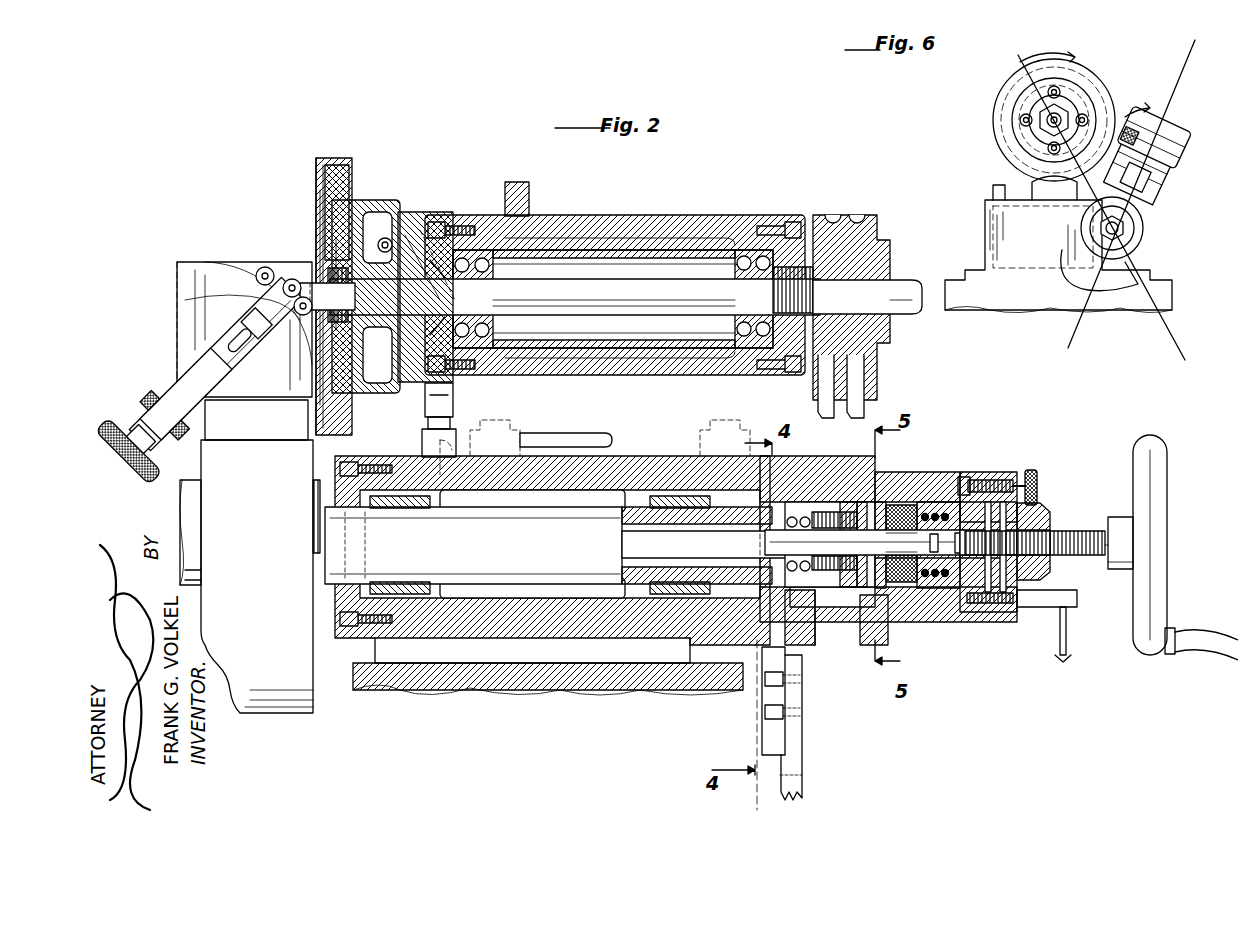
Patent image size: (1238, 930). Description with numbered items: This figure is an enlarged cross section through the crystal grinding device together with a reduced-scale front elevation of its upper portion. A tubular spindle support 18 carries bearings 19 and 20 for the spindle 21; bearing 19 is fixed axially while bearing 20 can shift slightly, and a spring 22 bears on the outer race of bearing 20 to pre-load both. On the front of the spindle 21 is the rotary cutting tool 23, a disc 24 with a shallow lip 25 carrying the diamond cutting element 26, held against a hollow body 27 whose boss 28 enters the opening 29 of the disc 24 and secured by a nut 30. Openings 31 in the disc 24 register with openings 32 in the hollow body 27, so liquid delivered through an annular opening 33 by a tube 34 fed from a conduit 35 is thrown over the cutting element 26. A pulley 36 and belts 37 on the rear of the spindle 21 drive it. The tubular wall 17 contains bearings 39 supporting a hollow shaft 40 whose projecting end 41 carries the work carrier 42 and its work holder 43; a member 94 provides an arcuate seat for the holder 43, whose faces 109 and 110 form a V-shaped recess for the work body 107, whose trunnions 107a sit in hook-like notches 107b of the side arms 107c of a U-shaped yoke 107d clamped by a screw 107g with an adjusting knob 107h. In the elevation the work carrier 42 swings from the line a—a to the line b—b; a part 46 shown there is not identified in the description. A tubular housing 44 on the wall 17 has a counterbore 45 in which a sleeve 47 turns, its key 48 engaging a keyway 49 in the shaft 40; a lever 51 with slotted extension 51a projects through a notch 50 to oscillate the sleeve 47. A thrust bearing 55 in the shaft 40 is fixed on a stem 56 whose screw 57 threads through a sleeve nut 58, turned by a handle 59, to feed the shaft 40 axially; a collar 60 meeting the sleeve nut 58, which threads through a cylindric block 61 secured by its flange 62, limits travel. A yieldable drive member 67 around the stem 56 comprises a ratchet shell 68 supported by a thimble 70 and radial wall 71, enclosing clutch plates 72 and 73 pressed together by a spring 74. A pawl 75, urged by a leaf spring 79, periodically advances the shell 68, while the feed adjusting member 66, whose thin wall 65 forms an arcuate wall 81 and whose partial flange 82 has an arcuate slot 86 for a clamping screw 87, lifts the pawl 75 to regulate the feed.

In FIG. 2, the tubular wall 17 is at (628, 455).
In FIG. 6, the tubular wall 17 is at (990, 222).
In FIG. 2, the tubular spindle support 18 is at (668, 188).
In FIG. 2, the bearing 19 is at (470, 240).
In FIG. 2, the bearing 20 is at (760, 250).
In FIG. 2, the spindle 21 is at (593, 306).
In FIG. 6, the spindle 21 is at (1030, 110).
In FIG. 2, the spring 22 is at (740, 280).
In FIG. 2, the rotary cutting tool 23 is at (345, 175).
In FIG. 6, the rotary cutting tool 23 is at (1100, 70).
In FIG. 2, the disc 24 is at (360, 180).
In FIG. 2, the lip 25 is at (322, 170).
In FIG. 2, the cutting element 26 is at (320, 180).
In FIG. 2, the hollow body 27 is at (375, 205).
In FIG. 2, the concentric boss 28 is at (378, 245).
In FIG. 2, the opening 29 is at (340, 250).
In FIG. 2, the nut 30 is at (325, 275).
In FIG. 6, the nut 30 is at (1068, 115).
In FIG. 2, the openings 31 is at (352, 215).
In FIG. 6, the openings 31 is at (1046, 150).
In FIG. 2, the openings 32 is at (398, 250).
In FIG. 2, the annular opening 33 is at (405, 395).
In FIG. 2, the tube 34 is at (432, 270).
In FIG. 2, the conduit 35 is at (577, 440).
In FIG. 2, the pulley 36 is at (893, 265).
In FIG. 2, the belts 37 is at (838, 382).
In FIG. 2, the bearings 39 is at (400, 500).
In FIG. 2, the hollow shaft 40 is at (585, 552).
In FIG. 2, the forwardly projecting end 41 is at (185, 490).
In FIG. 6, the forwardly projecting end 41 is at (1132, 232).
In FIG. 2, the work carrier 42 is at (270, 430).
In FIG. 2, the work holder 43 is at (232, 270).
In FIG. 2, the tubular housing 44 is at (908, 475).
In FIG. 2, the counterbore 45 is at (840, 505).
In FIG. 2, the sleeve 47 is at (792, 510).
In FIG. 2, the key 48 is at (820, 510).
In FIG. 2, the keyway 49 is at (748, 470).
In FIG. 2, the notch 50 is at (800, 645).
In FIG. 2, the lever 51 is at (770, 665).
In FIG. 2, the slotted extension 51a is at (793, 790).
In FIG. 2, the bearing 55 is at (822, 640).
In FIG. 2, the stem 56 is at (762, 546).
In FIG. 2, the screw 57 is at (1040, 512).
In FIG. 2, the sleeve nut 58 is at (1050, 530).
In FIG. 2, the handle 59 is at (1150, 517).
In FIG. 2, the collar 60 is at (975, 585).
In FIG. 2, the cylindric block 61 is at (1003, 585).
In FIG. 2, the partial flange 62 is at (1010, 615).
In FIG. 2, the thin wall 65 is at (968, 510).
In FIG. 2, the feed adjusting member 66 is at (1000, 475).
In FIG. 2, the yieldable drive member 67 is at (940, 510).
In FIG. 2, the cylindric shell 68 is at (942, 580).
In FIG. 2, the thimble 70 is at (950, 585).
In FIG. 2, the radial wall 71 is at (870, 515).
In FIG. 2, the first set of friction clutch plates 72 is at (900, 515).
In FIG. 2, the second set of friction clutch plates 73 is at (925, 530).
In FIG. 2, the spring 74 is at (925, 580).
In FIG. 2, the pawl 75 is at (875, 640).
In FIG. 2, the arcuate leaf spring 79 is at (860, 510).
In FIG. 2, the arcuate wall 81 is at (900, 505).
In FIG. 2, the partial flange 82 is at (1000, 480).
In FIG. 2, the arcuate slot 86 is at (1035, 482).
In FIG. 2, the clamping screw 87 is at (1020, 485).
In FIG. 2, the member 94 is at (182, 343).
In FIG. 6, the member 94 is at (1185, 172).
In FIG. 2, the work body 107 is at (260, 280).
In FIG. 2, the trunnions 107a is at (290, 280).
In FIG. 2, the hook-like notches 107b is at (300, 316).
In FIG. 2, the side arms 107c is at (230, 388).
In FIG. 2, the U-shaped yoke 107d is at (131, 411).
In FIG. 2, the screw 107g is at (155, 440).
In FIG. 2, the adjusting knob 107h is at (142, 470).
In FIG. 2, the face 109 is at (240, 303).
In FIG. 2, the face 110 is at (285, 330).
In FIG. 6, the arm 46 is at (1160, 205).
In FIG. 6, the line a— a is at (1126, 190).
In FIG. 6, the line b— b is at (1100, 204).